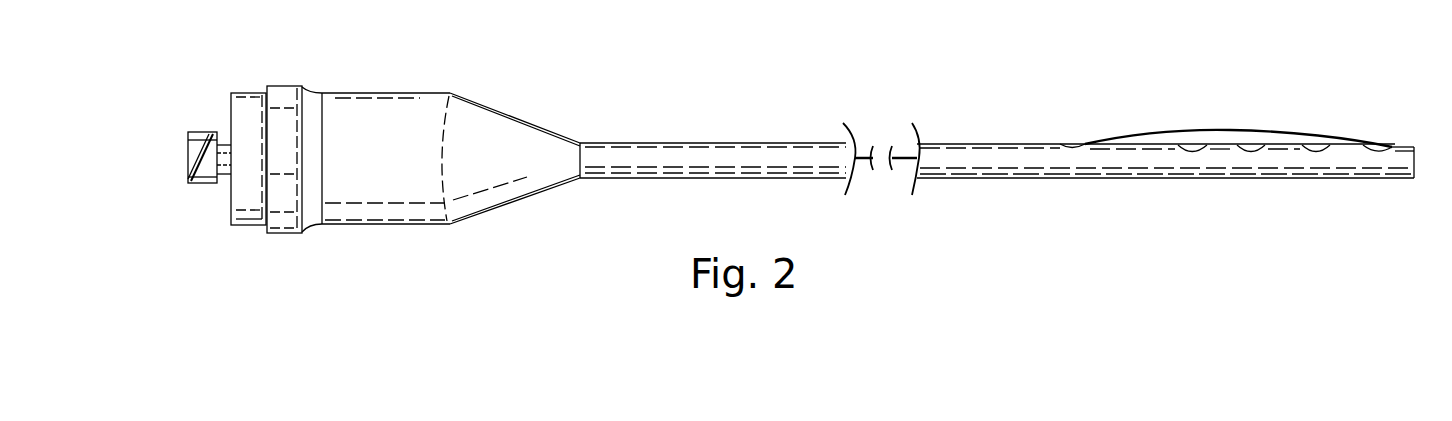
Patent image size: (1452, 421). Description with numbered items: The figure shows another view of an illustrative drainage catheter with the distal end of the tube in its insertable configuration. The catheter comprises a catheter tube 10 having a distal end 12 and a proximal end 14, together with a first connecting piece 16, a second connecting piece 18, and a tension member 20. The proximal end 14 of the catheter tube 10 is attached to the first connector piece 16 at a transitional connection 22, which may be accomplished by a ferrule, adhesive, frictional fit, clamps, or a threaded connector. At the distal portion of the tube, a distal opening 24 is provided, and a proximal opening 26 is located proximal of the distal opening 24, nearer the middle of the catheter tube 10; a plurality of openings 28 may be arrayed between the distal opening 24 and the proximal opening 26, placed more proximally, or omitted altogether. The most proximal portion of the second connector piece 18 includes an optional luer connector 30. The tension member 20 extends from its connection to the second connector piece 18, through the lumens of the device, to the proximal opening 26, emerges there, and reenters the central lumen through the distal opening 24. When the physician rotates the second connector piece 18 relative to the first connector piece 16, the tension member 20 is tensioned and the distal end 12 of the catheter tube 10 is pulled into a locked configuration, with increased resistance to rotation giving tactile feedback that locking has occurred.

The catheter tube 10 is at (988, 150).
The distal end 12 is at (1383, 165).
The proximal end 14 is at (655, 157).
The first connecting piece 16 is at (377, 127).
The second connecting piece 18 is at (247, 103).
The tension member 20 is at (863, 152).
The transitional connection 22 is at (502, 128).
The distal opening 24 is at (1380, 148).
The proximal opening 26 is at (1073, 145).
The plurality of openings 28 is at (1255, 148).
The luer connector 30 is at (200, 131).